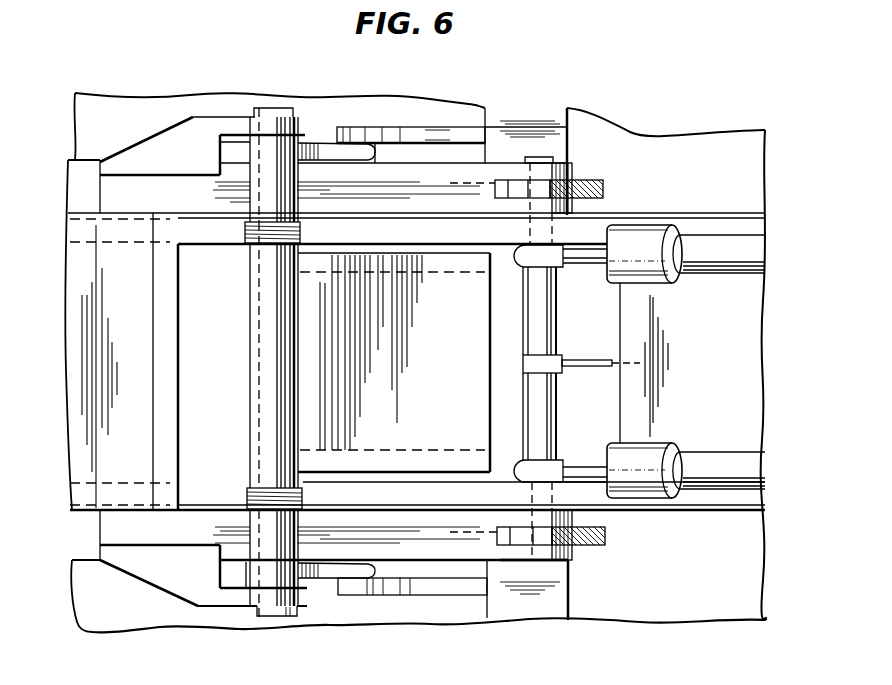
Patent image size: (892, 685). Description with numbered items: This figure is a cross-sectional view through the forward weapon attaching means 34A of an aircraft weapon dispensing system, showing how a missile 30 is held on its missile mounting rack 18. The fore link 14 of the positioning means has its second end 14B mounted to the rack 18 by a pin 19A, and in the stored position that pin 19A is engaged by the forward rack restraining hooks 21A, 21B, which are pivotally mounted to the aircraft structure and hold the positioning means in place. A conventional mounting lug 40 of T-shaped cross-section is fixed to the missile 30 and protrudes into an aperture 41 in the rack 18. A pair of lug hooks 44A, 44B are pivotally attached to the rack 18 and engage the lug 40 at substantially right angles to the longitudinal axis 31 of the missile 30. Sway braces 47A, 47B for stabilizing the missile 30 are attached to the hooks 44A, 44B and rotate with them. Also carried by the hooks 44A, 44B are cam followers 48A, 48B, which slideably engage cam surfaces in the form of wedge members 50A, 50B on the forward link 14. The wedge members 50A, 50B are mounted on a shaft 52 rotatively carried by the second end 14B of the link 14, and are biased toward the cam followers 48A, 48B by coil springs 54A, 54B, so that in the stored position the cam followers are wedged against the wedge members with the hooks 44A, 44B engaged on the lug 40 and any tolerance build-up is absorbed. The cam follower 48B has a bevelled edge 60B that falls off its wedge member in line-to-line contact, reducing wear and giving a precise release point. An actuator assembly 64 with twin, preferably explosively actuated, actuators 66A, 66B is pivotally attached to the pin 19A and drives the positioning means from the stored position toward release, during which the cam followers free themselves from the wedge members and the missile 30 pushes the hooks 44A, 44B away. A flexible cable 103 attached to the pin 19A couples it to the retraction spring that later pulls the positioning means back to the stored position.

The fore link 14 is at (80, 545).
The second end of the fore link 14B is at (577, 515).
The missile mounting rack 18 is at (700, 214).
The pin 19A is at (544, 550).
The rack restraining hook 21A is at (607, 535).
The rack restraining hook 21B is at (603, 178).
The missile 30 is at (717, 133).
The longitudinal axis 31 is at (278, 362).
The fore weapon attaching means 34A is at (370, 118).
The mounting lug 40 is at (454, 366).
The aperture 41 is at (178, 432).
The lug hook 44A is at (453, 572).
The lug hook 44B is at (457, 154).
The sway brace 47A is at (558, 612).
The sway brace 47B is at (550, 121).
The cam follower 48A is at (478, 596).
The cam follower 48B is at (430, 127).
The wedge member 50A is at (327, 578).
The wedge member 50B is at (318, 134).
The shaft 52 is at (257, 400).
The coil spring 54A is at (270, 497).
The coil spring 54B is at (266, 248).
The bevelled edge 60B is at (437, 137).
The actuator assembly 64 is at (730, 356).
The actuator 66A is at (740, 478).
The actuator 66B is at (724, 245).
The flexible cable 103 is at (585, 360).